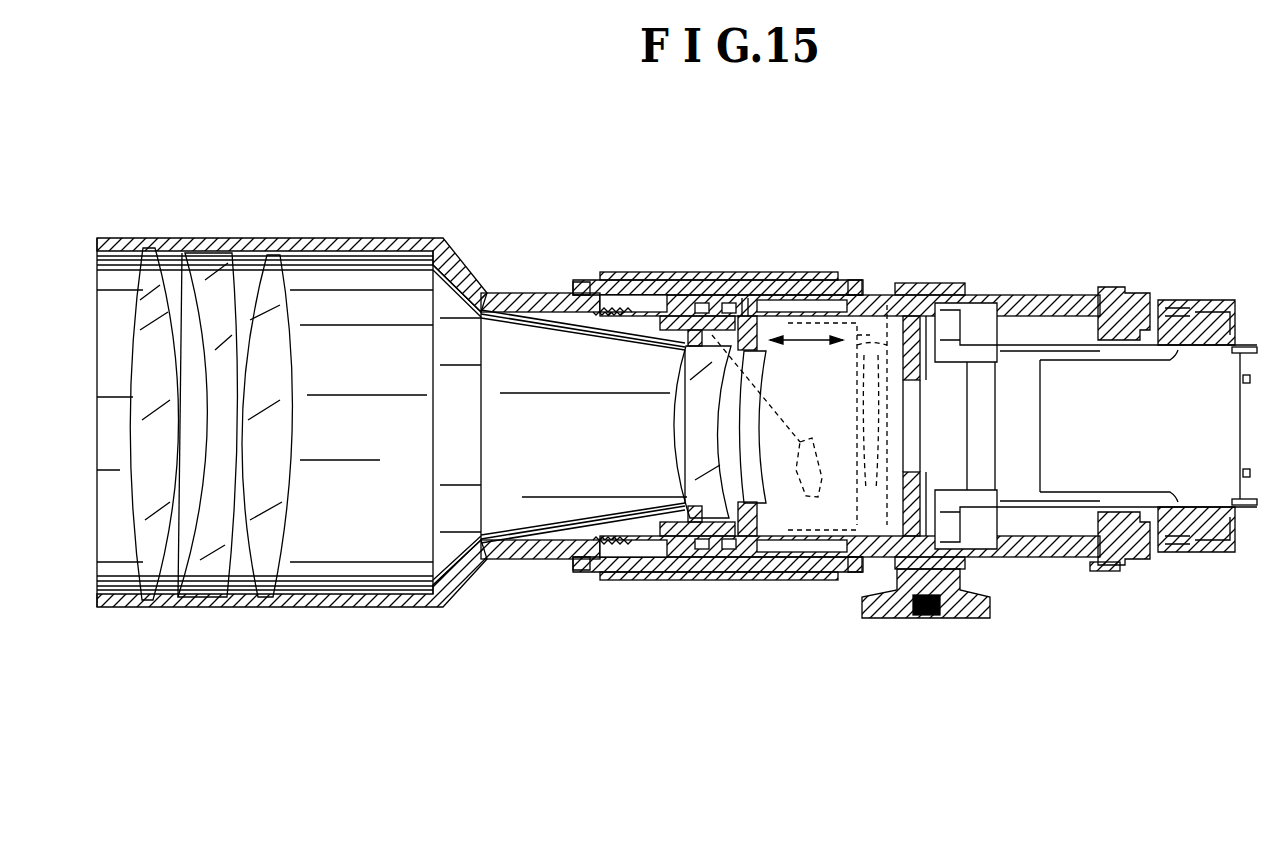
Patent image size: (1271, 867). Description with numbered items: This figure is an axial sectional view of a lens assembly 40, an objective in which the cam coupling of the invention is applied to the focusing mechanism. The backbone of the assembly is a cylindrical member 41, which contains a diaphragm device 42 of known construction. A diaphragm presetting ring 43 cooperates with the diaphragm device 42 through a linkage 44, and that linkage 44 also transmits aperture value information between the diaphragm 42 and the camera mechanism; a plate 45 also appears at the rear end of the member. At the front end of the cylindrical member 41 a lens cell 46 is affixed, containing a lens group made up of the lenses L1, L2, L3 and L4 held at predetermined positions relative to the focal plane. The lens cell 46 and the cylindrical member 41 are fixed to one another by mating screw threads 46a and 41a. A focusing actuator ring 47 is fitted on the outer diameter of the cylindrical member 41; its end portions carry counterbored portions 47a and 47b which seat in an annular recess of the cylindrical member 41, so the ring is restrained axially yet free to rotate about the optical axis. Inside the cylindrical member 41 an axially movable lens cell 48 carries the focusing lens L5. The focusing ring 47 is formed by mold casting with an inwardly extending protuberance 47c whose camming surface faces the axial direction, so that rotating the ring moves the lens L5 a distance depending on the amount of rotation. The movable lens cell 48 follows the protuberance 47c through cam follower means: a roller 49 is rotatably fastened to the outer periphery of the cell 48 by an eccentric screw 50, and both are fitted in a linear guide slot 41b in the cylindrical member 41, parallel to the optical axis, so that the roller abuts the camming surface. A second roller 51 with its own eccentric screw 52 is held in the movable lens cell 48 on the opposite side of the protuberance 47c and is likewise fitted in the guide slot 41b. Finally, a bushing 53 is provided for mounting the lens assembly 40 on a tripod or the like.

The lens assembly 40 is at (713, 590).
The cylindrical member 41 is at (872, 297).
The screw threads 41a is at (608, 297).
The linear guide slot 41b is at (800, 300).
The diaphragm device 42 is at (950, 335).
The diaphragm presetting ring 43 is at (1125, 300).
The linkage 44 is at (1027, 345).
The plate 45 is at (1248, 505).
The lens cell 46 is at (355, 253).
The screw threads 46a is at (600, 318).
The focusing actuator ring 47 is at (780, 280).
The counterbored portion 47a is at (582, 282).
The counterbored portion 47b is at (848, 282).
The protuberance 47c is at (713, 333).
The movable lens cell 48 is at (752, 316).
The roller 49 is at (745, 298).
The eccentric screw 50 is at (729, 303).
The second roller 51 is at (702, 303).
The eccentric screw 52 is at (678, 316).
The bushing 53 is at (890, 612).
The lens L1 is at (151, 255).
The lens L2 is at (213, 260).
The lens L3 is at (271, 265).
The lens L4 is at (700, 477).
The lens L5 is at (757, 500).